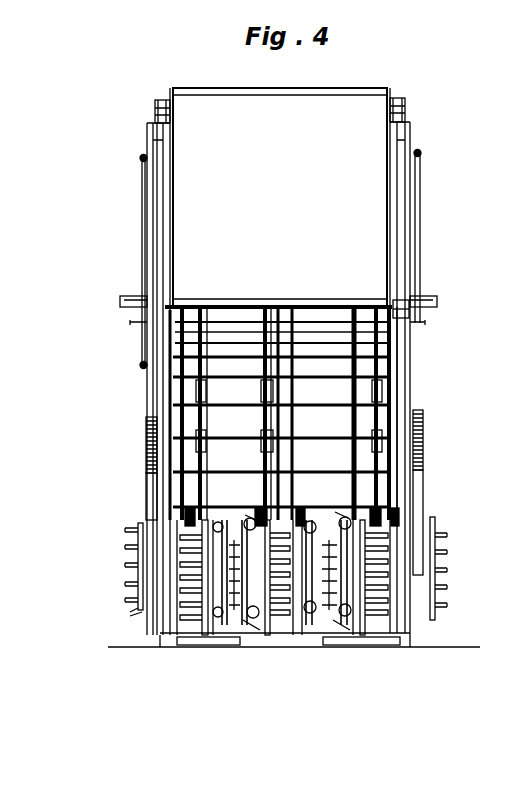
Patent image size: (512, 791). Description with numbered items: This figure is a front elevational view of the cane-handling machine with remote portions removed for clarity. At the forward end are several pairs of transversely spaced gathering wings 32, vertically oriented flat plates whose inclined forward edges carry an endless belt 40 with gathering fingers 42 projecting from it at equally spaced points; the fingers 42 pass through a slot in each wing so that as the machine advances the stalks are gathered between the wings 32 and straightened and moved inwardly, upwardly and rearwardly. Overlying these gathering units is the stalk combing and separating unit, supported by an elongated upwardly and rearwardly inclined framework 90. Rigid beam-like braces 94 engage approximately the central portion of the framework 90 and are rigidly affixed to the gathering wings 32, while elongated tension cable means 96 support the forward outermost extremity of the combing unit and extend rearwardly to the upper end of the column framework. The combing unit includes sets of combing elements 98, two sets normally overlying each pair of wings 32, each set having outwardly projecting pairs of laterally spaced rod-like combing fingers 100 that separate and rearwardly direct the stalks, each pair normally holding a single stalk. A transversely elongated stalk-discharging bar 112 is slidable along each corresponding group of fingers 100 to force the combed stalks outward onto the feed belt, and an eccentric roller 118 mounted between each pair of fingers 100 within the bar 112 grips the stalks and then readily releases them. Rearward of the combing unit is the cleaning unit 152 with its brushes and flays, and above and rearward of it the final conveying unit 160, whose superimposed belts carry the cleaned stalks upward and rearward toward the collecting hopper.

The final conveying unit 160 is at (391, 175).
The tension cable means 96 is at (143, 245).
The cleaning unit 152 is at (396, 310).
The framework 90 is at (425, 378).
The beam-like braces 94 is at (145, 470).
The gathering fingers 42 is at (137, 580).
The stalk-discharging bar 112 is at (342, 403).
The eccentric roller 118 is at (280, 398).
The combing elements 98 is at (350, 406).
The combing fingers 100 is at (360, 476).
The gathering wings 32 is at (265, 632).
The endless belt 40 is at (326, 625).